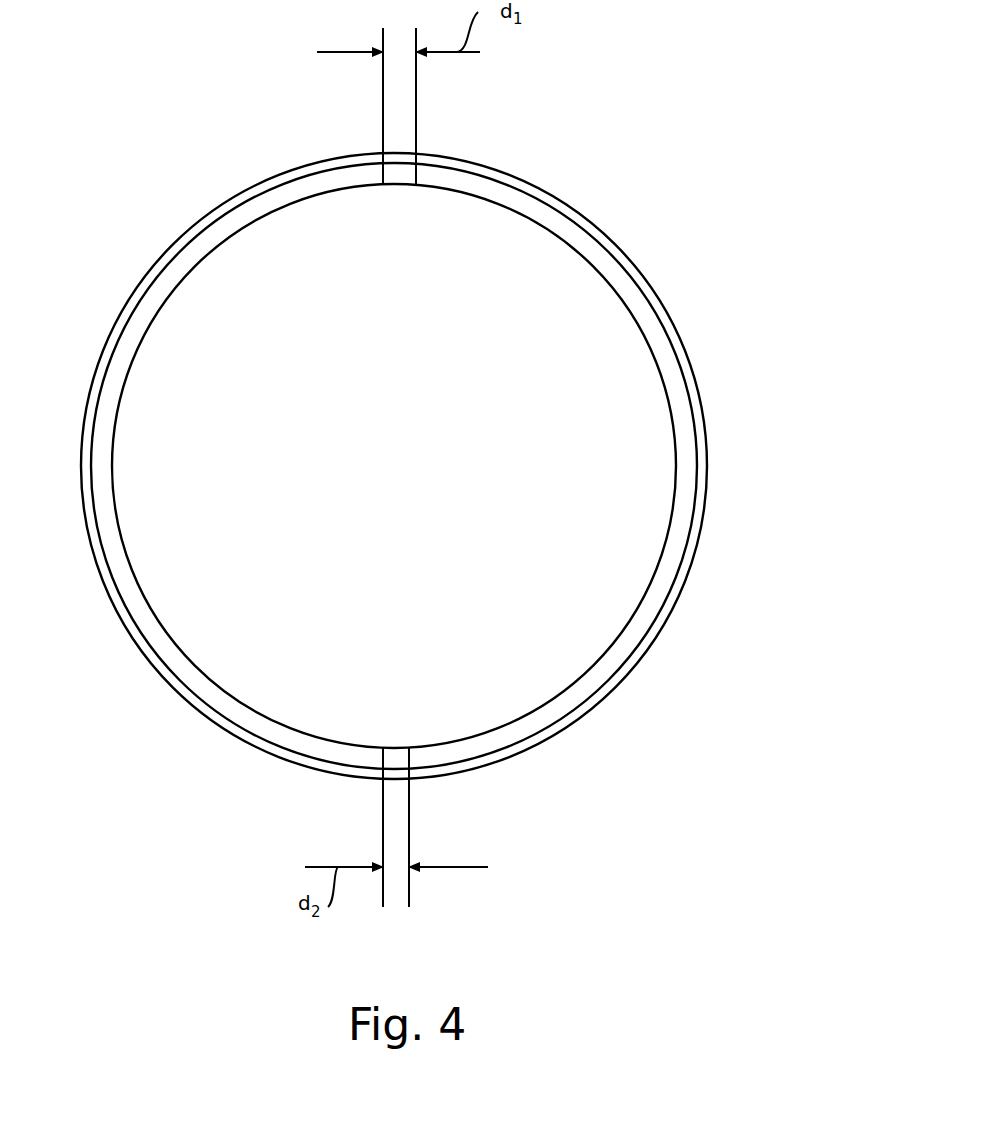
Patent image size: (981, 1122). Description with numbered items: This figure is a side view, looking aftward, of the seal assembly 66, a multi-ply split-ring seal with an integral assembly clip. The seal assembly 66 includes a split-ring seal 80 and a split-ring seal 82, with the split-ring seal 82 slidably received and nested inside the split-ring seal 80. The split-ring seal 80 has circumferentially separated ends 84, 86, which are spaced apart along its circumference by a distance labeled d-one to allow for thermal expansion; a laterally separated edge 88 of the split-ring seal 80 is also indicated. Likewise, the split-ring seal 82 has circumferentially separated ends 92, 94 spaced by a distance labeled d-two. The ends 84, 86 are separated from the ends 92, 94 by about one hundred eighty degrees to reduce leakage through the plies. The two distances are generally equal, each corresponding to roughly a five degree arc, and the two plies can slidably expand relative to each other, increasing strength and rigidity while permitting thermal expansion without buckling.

The seal assembly 66 is at (100, 130).
The split-ring seal 80 is at (640, 313).
The split-ring seal 82 is at (400, 173).
The end 84 is at (382, 183).
The end 86 is at (418, 175).
The edge 88 is at (676, 592).
The end 92 is at (383, 765).
The end 94 is at (408, 753).